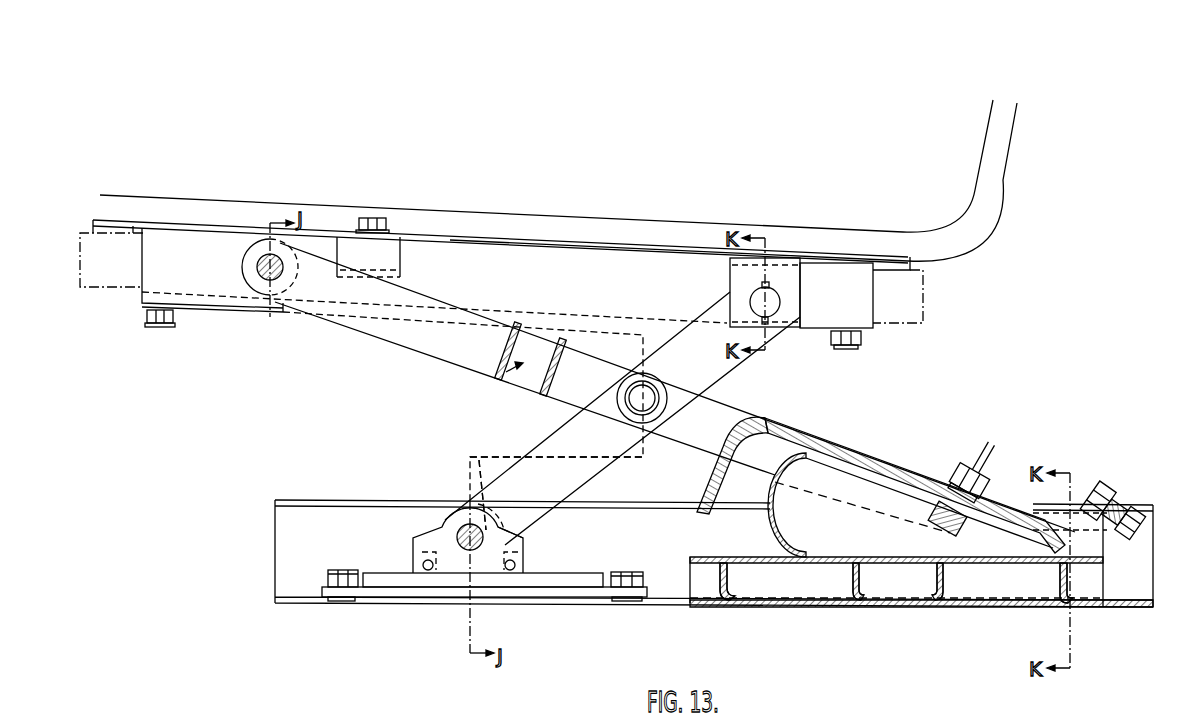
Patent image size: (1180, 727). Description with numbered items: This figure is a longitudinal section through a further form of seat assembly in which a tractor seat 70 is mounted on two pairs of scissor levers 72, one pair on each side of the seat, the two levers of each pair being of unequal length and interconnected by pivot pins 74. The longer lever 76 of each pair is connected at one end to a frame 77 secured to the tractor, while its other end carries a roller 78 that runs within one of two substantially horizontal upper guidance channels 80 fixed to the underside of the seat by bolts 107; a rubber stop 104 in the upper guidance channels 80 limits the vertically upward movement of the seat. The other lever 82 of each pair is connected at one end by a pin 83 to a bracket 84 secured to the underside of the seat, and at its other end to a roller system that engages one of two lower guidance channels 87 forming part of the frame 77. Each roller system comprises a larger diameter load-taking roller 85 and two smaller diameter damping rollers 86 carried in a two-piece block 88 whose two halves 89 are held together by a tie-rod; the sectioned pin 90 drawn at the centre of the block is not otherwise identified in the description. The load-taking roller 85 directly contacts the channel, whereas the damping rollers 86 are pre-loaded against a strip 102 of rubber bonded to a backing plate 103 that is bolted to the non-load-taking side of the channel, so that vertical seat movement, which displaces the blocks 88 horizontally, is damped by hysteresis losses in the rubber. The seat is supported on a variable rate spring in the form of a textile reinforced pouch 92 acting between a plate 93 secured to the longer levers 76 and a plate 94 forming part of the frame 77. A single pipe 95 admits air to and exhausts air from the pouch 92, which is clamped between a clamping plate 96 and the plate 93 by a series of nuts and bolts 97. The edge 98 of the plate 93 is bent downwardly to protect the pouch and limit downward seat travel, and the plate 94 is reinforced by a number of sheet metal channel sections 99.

The tractor seat 70 is at (982, 201).
The scissor levers 72 is at (497, 377).
The pivot pins 74 is at (646, 410).
The longer lever 76 is at (413, 343).
The frame 77 is at (1007, 592).
The roller 78 is at (243, 253).
The upper guidance channels 80 is at (207, 305).
The lever 82 is at (590, 470).
The pin 83 is at (781, 304).
The bracket 84 is at (797, 272).
The load-taking roller 85 is at (481, 459).
The damping rollers 86 is at (433, 575).
The lower guidance channels 87 is at (447, 500).
The two-piece block 88 is at (420, 550).
The halves of block 89 is at (523, 552).
The lower pivot pin 90 is at (475, 552).
The textile reinforced pouch 92 is at (868, 542).
The plate 93 is at (875, 462).
The plate 94 is at (783, 565).
The pipe 95 is at (980, 448).
The clamping plate 96 is at (1132, 500).
The nuts and bolts 97 is at (1094, 496).
The edge of plate 98 is at (714, 489).
The sheet metal channel sections 99 is at (725, 580).
The strip of rubber 102 is at (592, 587).
The backing plate 103 is at (563, 600).
The rubber stop 104 is at (390, 248).
The bolts 107 is at (150, 313).